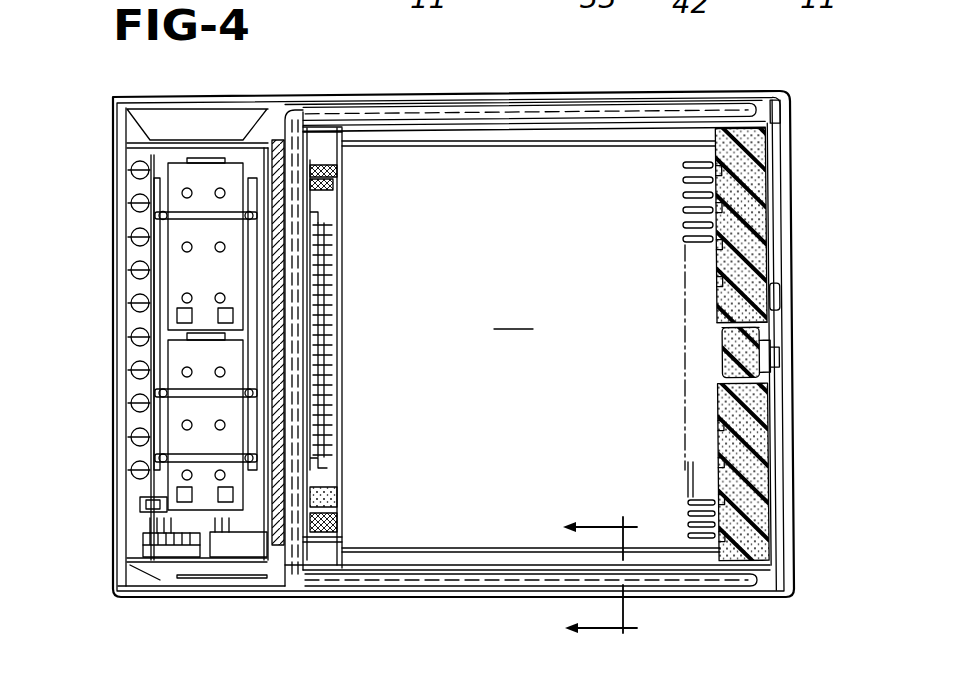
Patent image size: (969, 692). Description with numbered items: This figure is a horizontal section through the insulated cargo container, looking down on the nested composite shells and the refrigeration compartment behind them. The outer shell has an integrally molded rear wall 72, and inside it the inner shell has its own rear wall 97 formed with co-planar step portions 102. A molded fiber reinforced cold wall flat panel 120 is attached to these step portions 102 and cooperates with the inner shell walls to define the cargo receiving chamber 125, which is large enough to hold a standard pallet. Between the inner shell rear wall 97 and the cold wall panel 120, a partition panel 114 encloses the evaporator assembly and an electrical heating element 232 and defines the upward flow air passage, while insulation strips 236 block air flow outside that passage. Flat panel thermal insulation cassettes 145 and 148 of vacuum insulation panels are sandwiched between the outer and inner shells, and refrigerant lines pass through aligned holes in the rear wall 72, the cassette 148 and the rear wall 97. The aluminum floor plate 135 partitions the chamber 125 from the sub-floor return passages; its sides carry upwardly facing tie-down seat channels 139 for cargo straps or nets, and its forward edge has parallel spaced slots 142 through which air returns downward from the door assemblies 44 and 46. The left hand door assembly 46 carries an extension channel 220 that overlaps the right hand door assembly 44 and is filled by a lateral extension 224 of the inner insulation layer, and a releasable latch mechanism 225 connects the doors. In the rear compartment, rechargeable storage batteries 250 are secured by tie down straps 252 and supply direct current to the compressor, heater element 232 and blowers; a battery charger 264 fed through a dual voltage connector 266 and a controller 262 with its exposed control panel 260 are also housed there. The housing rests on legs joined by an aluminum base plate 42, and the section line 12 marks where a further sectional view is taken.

The rear wall 72 is at (285, 110).
The step portions 102 is at (327, 100).
The insulation strips 236 is at (333, 168).
The thermal insulation cassette 145 is at (481, 106).
The floor plate 135 is at (553, 156).
The right hand door assembly 44 is at (772, 200).
The latch mechanism 225 is at (775, 303).
The slots 142 is at (681, 224).
The tie-down seat channels 139 is at (510, 147).
The partition panel 114 is at (346, 209).
The electrical heating element 232 is at (333, 289).
The cargo receiving chamber 125 is at (513, 313).
The cold wall flat panel 120 is at (347, 323).
The rear wall of inner shell 97 is at (305, 443).
The lateral extension 224 is at (720, 337).
The extension channel 220 is at (720, 354).
The left hand door assembly 46 is at (768, 442).
The dual voltage connector 266 is at (132, 545).
The controller 262 is at (165, 568).
The control panel 260 is at (198, 590).
The battery charger 264 is at (245, 550).
The thermal insulation cassette 148 is at (304, 556).
The tie down straps 252 is at (185, 210).
The storage batteries 250 is at (175, 257).
The section line 12- 12 is at (619, 576).
The base plate 42 is at (690, 10).